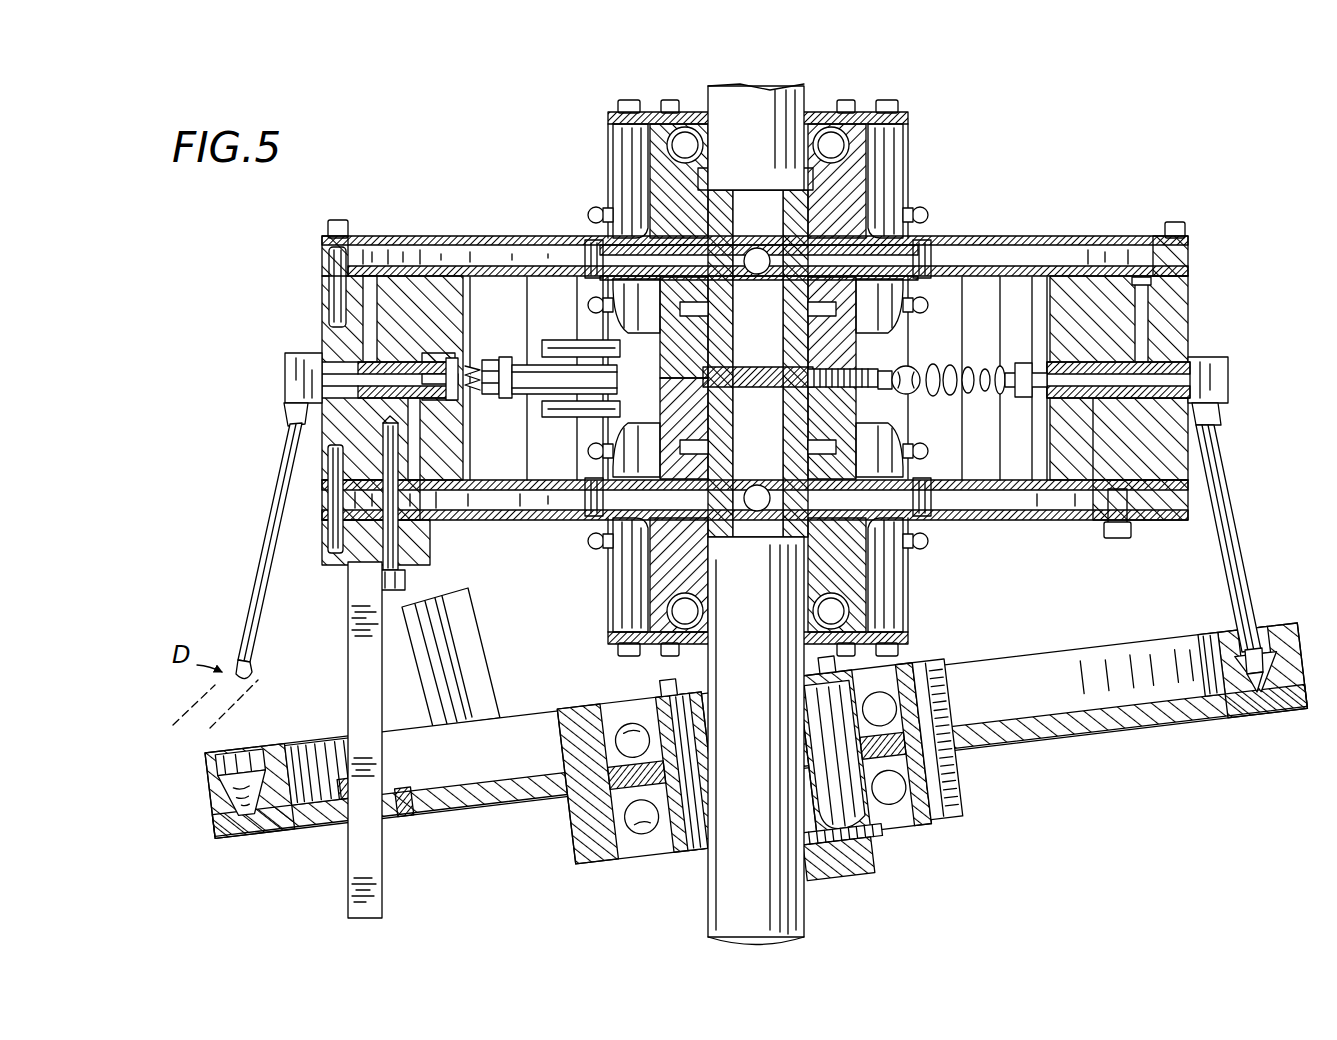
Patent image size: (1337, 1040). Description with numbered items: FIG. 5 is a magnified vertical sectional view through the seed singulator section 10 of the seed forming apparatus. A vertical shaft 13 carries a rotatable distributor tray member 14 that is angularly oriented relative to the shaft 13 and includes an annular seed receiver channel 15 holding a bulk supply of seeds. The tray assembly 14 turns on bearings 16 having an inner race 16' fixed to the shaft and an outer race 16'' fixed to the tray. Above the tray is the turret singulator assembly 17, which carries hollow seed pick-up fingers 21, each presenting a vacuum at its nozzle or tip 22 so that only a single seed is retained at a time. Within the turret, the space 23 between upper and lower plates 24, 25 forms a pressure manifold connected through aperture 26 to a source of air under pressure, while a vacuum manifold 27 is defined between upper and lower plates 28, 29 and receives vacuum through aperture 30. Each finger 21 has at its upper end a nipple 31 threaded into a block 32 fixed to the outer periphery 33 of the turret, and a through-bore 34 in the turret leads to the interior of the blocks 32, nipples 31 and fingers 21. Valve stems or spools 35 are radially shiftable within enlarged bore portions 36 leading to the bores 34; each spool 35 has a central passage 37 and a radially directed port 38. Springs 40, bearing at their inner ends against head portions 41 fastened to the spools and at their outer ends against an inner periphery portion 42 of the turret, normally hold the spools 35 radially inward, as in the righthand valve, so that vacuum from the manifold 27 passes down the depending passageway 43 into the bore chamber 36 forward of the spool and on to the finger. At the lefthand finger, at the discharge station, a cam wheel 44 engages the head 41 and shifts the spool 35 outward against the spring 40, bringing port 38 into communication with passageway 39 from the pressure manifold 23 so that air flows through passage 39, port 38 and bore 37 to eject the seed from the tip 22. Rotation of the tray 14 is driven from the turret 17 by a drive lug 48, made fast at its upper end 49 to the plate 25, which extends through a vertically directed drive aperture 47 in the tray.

The seed singulator section 10 is at (1080, 172).
The vertical shaft 13 is at (804, 910).
The distributor tray member 14 is at (1062, 737).
The annular seed receiver channel 15 is at (1258, 690).
The bearings 16 is at (813, 756).
The inner race 16' is at (868, 852).
The outer race 16'' is at (956, 758).
The turret singulator assembly 17 is at (1224, 262).
The seed pick-up fingers 21 is at (1232, 478).
The nozzle or tip 22 is at (1270, 680).
The pressure manifold 23 is at (1020, 497).
The upper plate 24 is at (543, 508).
The lower plate 25 is at (512, 520).
The aperture 26 is at (757, 485).
The vacuum manifold 27 is at (978, 232).
The upper plate 28 is at (1046, 235).
The lower plate 29 is at (1080, 267).
The aperture 30 is at (758, 248).
The nipple 31 is at (1229, 412).
The block 32 is at (1224, 374).
The outer periphery 33 is at (1190, 330).
The through-bore 34 is at (302, 366).
The valve stem or spool 35 is at (345, 351).
The enlarged bore portion 36 is at (308, 393).
The central passage 37 is at (416, 362).
The communicating port 38 is at (421, 394).
The passageway 39 is at (420, 456).
The spring 40 is at (488, 382).
The head portion 41 is at (468, 372).
The inner periphery portion 42 is at (468, 360).
The depending passageway 43 is at (1146, 298).
The cam wheel 44 is at (533, 360).
The drive aperture 47 is at (397, 800).
The drive lug 48 is at (348, 657).
The upper end 49 is at (357, 567).